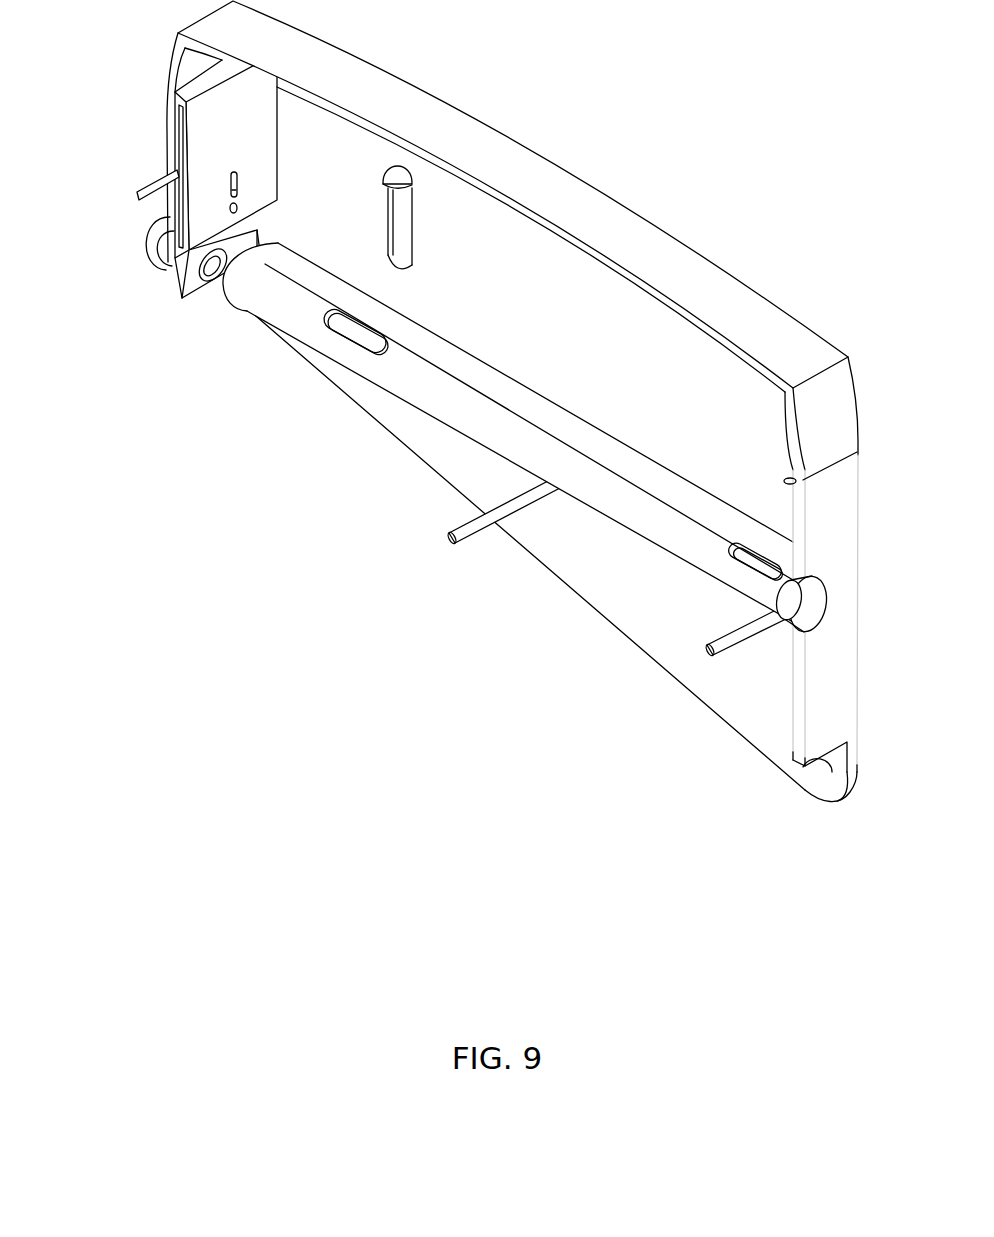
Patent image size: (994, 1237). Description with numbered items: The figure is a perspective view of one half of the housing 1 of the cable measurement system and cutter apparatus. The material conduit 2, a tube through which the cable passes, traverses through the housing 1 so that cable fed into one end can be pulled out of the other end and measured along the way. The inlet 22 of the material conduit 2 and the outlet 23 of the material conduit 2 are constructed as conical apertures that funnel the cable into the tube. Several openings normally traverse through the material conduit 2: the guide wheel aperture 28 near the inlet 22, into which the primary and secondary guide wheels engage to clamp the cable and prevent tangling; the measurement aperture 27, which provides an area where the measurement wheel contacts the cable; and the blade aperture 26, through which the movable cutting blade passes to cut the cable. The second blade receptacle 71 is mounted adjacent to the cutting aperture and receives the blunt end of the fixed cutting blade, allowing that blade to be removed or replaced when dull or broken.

The housing 1 is at (652, 245).
The material conduit 2 is at (476, 399).
The inlet 22 is at (806, 607).
The outlet 23 is at (140, 231).
The blade aperture 26 is at (211, 289).
The measurement aperture 27 is at (359, 333).
The guide wheel aperture 28 is at (756, 556).
The second blade receptacle 71 is at (252, 139).